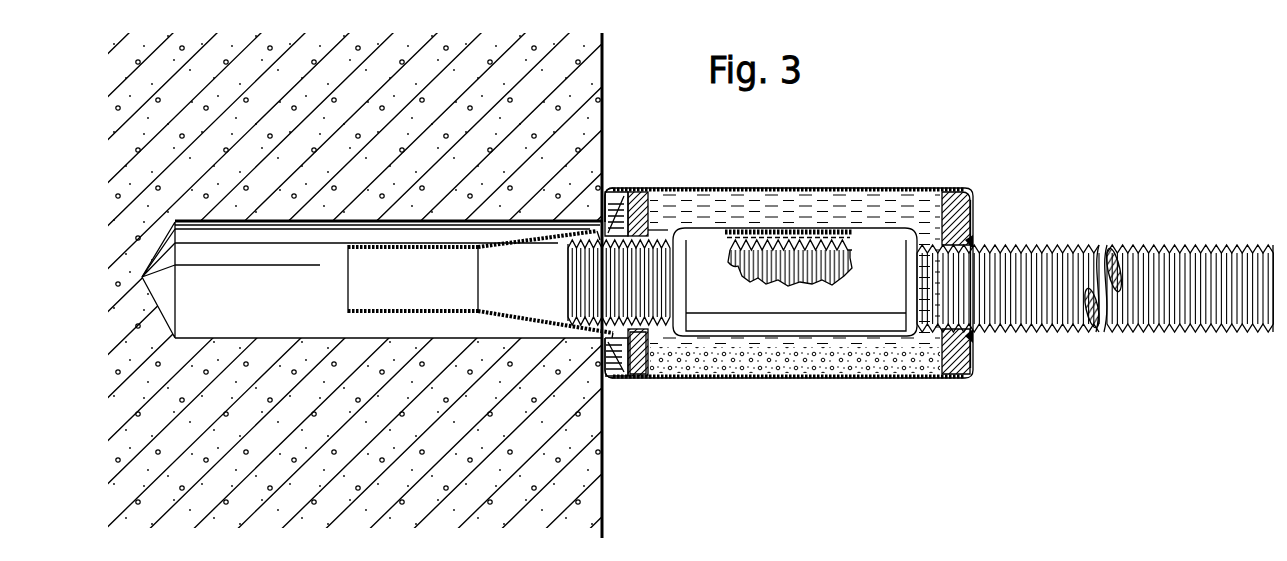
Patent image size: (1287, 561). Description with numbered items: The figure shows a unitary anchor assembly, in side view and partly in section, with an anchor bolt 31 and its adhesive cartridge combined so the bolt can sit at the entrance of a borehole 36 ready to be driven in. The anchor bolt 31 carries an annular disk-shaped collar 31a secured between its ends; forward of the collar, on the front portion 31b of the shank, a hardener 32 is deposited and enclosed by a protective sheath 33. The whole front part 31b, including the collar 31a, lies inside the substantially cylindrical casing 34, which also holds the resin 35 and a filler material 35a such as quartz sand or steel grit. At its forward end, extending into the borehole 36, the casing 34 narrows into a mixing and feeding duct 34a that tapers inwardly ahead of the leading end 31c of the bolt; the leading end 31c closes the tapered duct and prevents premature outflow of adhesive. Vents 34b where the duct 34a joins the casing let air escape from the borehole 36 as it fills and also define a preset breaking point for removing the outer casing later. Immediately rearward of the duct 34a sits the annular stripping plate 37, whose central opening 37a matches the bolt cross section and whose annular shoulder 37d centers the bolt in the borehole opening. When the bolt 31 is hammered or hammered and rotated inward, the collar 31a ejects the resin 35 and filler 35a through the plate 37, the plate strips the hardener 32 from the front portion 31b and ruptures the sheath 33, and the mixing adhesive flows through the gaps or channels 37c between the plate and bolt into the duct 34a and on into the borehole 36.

The anchor bolt 31 is at (1166, 247).
The annular disk-shaped collar 31a is at (951, 192).
The front portion of the bolt shank 31b is at (595, 252).
The leading end of the bolt 31c is at (569, 287).
The hardener 32 is at (828, 237).
The protective sheath 33 is at (785, 228).
The casing 34 is at (846, 378).
The mixing and feeding duct 34a is at (364, 309).
The vents 34b is at (620, 368).
The resin 35 is at (873, 202).
The filler material 35a is at (707, 366).
The borehole 36 is at (192, 338).
The stripping plate 37 is at (652, 213).
The centrally arranged opening 37a is at (648, 322).
The gaps or channels 37c is at (654, 346).
The annular shoulder 37d is at (622, 227).